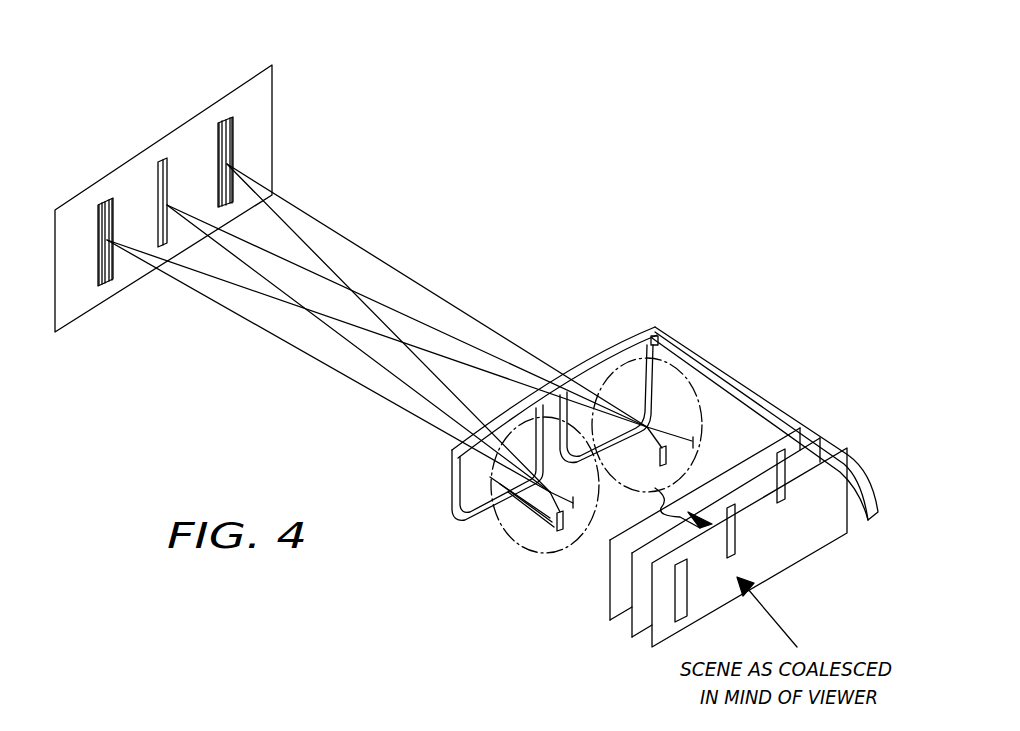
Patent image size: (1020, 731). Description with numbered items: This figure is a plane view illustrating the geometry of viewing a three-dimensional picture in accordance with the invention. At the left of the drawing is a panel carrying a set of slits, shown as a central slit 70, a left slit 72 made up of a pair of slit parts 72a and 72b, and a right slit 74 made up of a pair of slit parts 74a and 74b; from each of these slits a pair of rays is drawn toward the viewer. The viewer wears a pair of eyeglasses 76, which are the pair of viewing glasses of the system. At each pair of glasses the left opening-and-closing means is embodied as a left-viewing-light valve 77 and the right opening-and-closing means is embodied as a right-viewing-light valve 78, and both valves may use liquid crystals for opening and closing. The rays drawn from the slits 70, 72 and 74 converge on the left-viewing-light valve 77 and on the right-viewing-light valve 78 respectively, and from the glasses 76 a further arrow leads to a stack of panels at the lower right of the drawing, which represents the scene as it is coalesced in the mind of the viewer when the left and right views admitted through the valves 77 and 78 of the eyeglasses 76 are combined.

The center slit 70 is at (160, 160).
The left slit pair 72 is at (105, 288).
The left slit pair first slit 72a is at (112, 213).
The left slit pair second slit 72b is at (99, 210).
The right slit pair 74 is at (226, 120).
The right slit pair first slit 74a is at (218, 152).
The right slit pair second slit 74b is at (233, 134).
The eyeglasses 76 is at (655, 328).
The left-viewing-light valve 77 is at (475, 510).
The right-viewing-light valve 78 is at (623, 360).